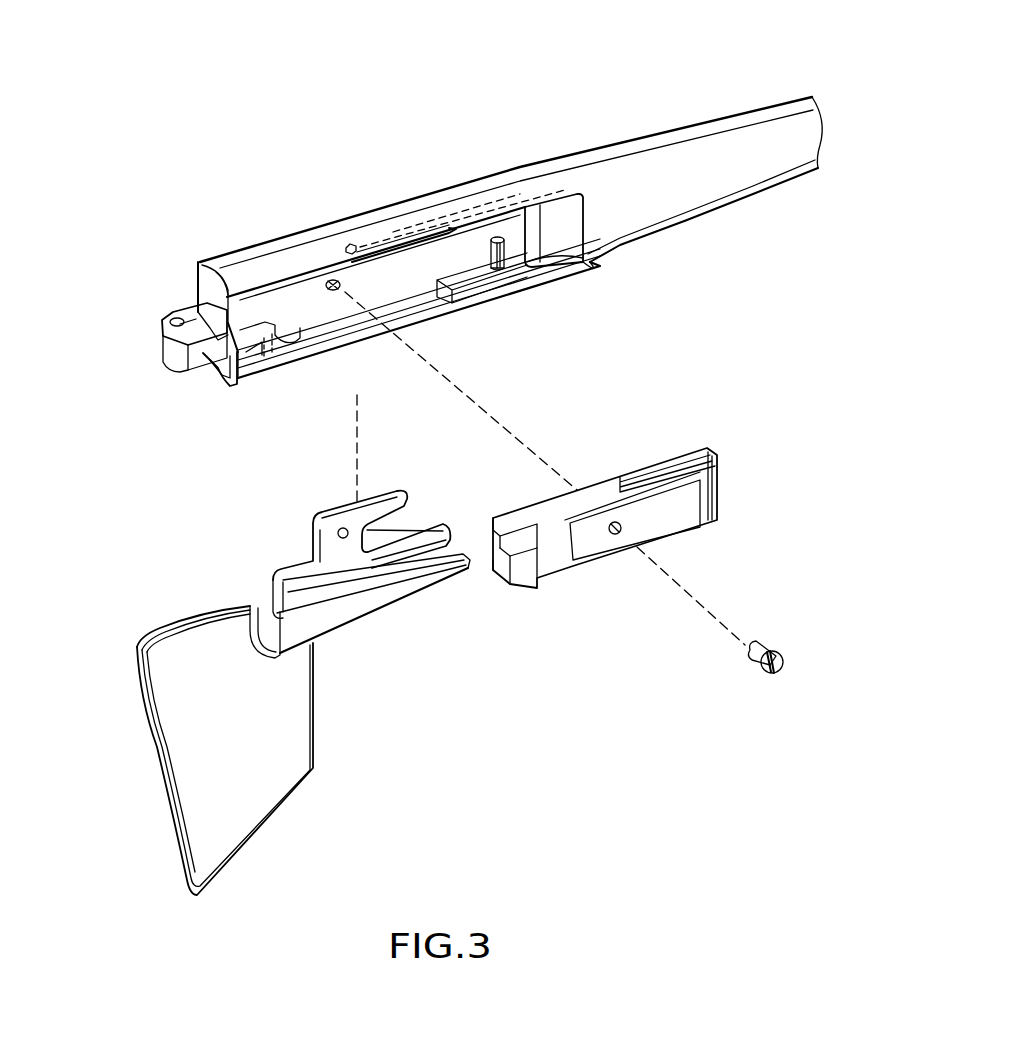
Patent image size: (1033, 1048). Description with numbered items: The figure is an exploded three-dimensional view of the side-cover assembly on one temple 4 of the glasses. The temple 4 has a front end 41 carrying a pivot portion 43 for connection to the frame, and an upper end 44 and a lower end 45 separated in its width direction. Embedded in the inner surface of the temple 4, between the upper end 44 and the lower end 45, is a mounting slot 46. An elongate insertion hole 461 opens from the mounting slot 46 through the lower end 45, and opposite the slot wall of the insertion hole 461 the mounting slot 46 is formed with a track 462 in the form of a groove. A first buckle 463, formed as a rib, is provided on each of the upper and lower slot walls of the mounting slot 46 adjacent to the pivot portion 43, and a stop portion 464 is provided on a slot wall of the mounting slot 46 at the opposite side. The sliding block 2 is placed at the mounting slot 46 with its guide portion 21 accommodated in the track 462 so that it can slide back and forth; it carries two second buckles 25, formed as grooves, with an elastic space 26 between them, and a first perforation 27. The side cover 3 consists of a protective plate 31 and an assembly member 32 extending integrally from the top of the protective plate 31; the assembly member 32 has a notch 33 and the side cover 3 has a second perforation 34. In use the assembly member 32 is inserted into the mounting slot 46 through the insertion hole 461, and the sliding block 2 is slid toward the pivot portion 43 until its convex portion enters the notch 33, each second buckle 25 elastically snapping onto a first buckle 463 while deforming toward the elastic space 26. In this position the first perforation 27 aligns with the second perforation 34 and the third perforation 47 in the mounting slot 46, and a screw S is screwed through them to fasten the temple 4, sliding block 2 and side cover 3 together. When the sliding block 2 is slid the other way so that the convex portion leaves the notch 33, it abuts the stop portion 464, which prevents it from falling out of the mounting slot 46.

The temple 4 is at (725, 90).
The upper end 44 is at (590, 157).
The front end 41 is at (214, 265).
The pivot portion 43 is at (166, 318).
The lower end 45 is at (535, 258).
The mounting slot 46 is at (290, 297).
The third perforation 47 is at (352, 245).
The insertion hole 461 is at (310, 325).
The track 462 is at (402, 238).
The first buckle 463 is at (208, 280).
The stop portion 464 is at (533, 258).
The side cover 3 is at (276, 832).
The protective plate 31 is at (190, 767).
The assembly member 32 is at (286, 565).
The notch 33 is at (405, 507).
The second perforation 34 is at (342, 527).
The sliding block 2 is at (690, 512).
The guide portion 21 is at (665, 460).
The second buckle 25 is at (513, 578).
The elastic space 26 is at (497, 540).
The first perforation 27 is at (615, 540).
The screw S is at (758, 672).